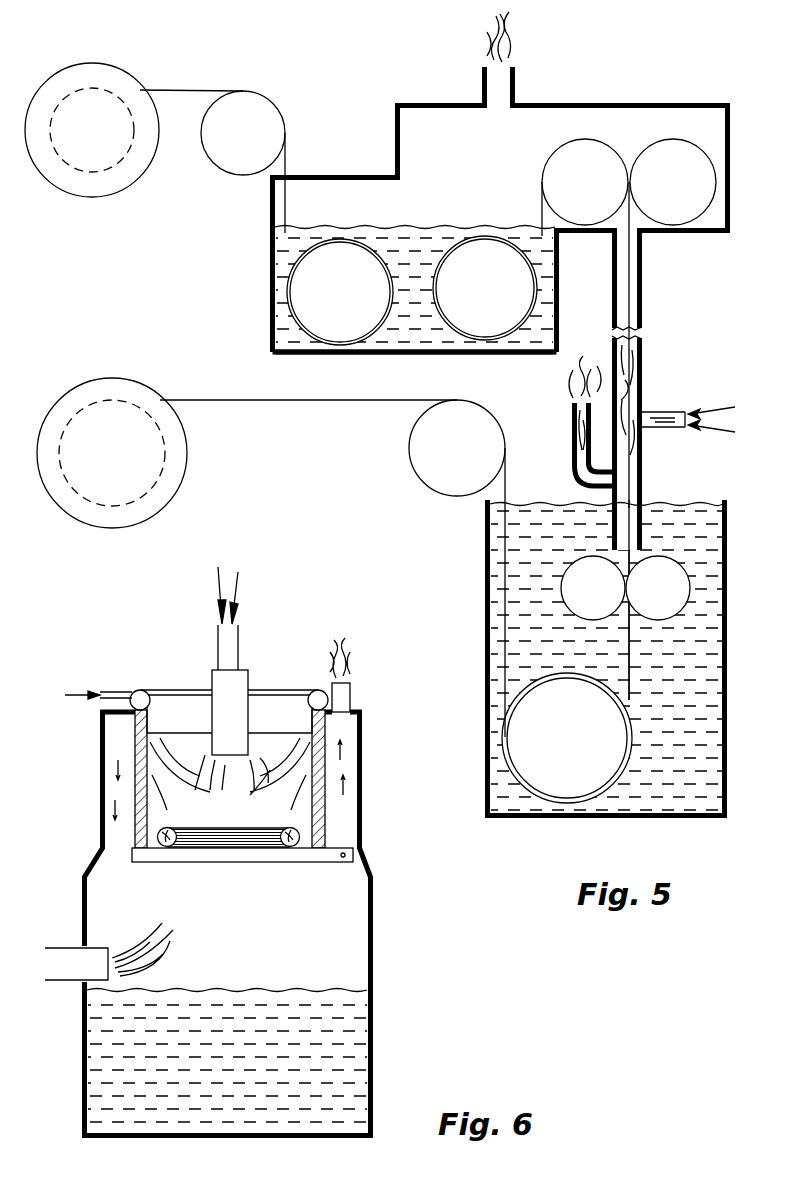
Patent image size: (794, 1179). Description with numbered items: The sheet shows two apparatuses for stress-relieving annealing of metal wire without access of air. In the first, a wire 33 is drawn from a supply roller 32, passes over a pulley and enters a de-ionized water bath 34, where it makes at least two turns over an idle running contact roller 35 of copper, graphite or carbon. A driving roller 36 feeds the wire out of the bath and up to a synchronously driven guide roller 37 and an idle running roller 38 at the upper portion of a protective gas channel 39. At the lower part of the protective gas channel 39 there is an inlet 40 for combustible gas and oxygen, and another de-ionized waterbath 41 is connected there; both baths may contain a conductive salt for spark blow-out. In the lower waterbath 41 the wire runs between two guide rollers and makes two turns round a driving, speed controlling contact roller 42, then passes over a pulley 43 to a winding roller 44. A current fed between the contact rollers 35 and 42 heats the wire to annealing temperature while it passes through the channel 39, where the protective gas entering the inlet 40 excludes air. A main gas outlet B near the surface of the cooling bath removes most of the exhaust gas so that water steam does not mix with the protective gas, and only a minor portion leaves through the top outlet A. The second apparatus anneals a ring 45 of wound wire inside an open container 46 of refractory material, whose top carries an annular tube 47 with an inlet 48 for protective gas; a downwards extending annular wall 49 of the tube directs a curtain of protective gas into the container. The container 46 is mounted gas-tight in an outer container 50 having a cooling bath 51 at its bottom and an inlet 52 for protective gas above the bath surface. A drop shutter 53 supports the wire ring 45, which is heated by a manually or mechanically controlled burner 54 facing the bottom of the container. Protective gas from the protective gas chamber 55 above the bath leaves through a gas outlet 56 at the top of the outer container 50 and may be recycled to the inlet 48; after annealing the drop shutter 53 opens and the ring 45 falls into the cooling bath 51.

In FIG. 5, the supply roller 32 is at (101, 188).
In FIG. 5, the wire 33 is at (298, 165).
In FIG. 5, the de-ionized water bath 34 is at (283, 332).
In FIG. 5, the idle running contact roller 35 is at (347, 258).
In FIG. 5, the driving roller 36 is at (478, 260).
In FIG. 5, the synchronously driven guide roller 37 is at (572, 163).
In FIG. 5, the idle running roller 38 is at (668, 160).
In FIG. 5, the protective gas channel 39 is at (645, 282).
In FIG. 5, the inlet for combustible gas and oxygen 40 is at (672, 410).
In FIG. 5, the waterbath 41 is at (728, 645).
In FIG. 5, the driving, speed controlling contact roller 42 is at (567, 738).
In FIG. 5, the pulley 43 is at (430, 470).
In FIG. 5, the winding roller 44 is at (150, 460).
In FIG. 5, the top outlet A is at (510, 32).
In FIG. 5, the main gas outlet B is at (568, 382).
In FIG. 6, the ring of wound wire 45 is at (158, 838).
In FIG. 6, the open container 46 is at (140, 770).
In FIG. 6, the annular tube 47 is at (285, 710).
In FIG. 6, the inlet for protective gas 48 is at (115, 695).
In FIG. 6, the downwards extending annular wall 49 is at (275, 733).
In FIG. 6, the outer container 50 is at (375, 900).
In FIG. 6, the cooling bath 51 is at (355, 1035).
In FIG. 6, the inlet for protective gas 52 is at (62, 960).
In FIG. 6, the drop shutter 53 is at (275, 855).
In FIG. 6, the burner 54 is at (225, 690).
In FIG. 6, the protective gas chamber 55 is at (352, 948).
In FIG. 6, the gas outlet 56 is at (368, 655).